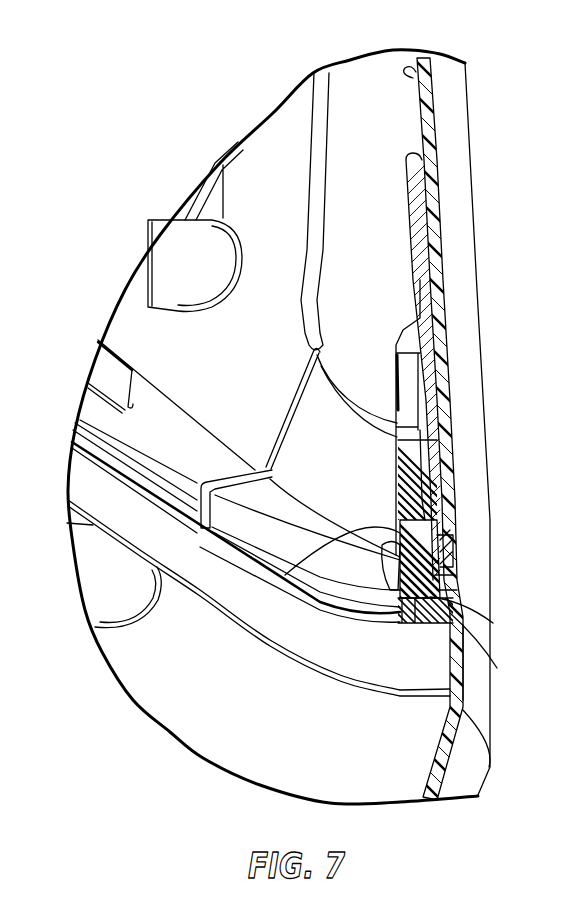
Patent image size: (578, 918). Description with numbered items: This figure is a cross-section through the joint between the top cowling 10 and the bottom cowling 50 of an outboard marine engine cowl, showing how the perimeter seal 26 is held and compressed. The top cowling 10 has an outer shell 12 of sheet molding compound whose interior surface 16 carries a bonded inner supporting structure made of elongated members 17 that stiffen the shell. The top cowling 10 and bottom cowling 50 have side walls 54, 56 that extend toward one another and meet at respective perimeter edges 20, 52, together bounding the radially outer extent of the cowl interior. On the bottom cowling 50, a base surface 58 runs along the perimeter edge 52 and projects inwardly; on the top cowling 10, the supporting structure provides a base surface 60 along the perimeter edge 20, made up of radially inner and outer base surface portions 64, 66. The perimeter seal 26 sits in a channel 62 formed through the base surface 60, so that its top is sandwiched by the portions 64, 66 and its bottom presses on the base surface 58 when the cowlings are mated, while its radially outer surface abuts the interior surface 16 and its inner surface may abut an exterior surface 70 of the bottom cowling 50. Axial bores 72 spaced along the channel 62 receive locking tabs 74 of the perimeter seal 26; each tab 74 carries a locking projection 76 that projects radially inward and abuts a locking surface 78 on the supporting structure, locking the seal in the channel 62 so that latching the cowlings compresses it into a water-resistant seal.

The top cowling 10 is at (232, 128).
The outer shell 12 is at (363, 82).
The interior surface 16 is at (413, 80).
The elongated member 17 is at (447, 395).
The perimeter edge 20 is at (430, 610).
The perimeter seal 26 is at (440, 578).
The bottom cowling 50 is at (266, 711).
The perimeter edge 52 is at (452, 612).
The side wall 54 is at (428, 128).
The side wall 56 is at (462, 685).
The base surface 58 is at (420, 600).
The base surface 60 is at (395, 504).
The channel 62 is at (447, 513).
The radially inner base surface portion 64 is at (385, 530).
The radially outer base surface portion 66 is at (440, 538).
The exterior surface 70 is at (405, 570).
The axial bore 72 is at (397, 455).
The locking tab 74 is at (417, 433).
The locking projection 76 is at (445, 462).
The locking surface 78 is at (413, 487).